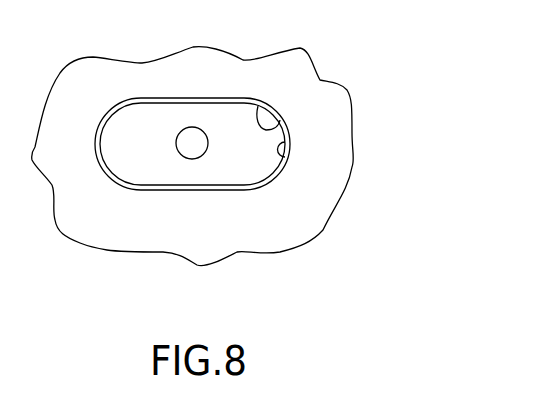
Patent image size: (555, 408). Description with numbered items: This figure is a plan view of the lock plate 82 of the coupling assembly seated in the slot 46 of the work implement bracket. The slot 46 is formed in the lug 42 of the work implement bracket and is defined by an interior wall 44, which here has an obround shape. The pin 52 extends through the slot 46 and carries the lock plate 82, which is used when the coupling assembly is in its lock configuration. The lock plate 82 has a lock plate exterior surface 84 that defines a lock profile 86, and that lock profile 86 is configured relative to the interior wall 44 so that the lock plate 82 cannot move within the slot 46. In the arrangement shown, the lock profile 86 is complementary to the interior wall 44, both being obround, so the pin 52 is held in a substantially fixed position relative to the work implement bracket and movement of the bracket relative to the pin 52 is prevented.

The lug 42 is at (312, 100).
The interior wall 44 is at (288, 158).
The slot 46 is at (282, 177).
The pin 52 is at (192, 137).
The lock plate 82 is at (167, 172).
The lock plate exterior surface 84 is at (258, 106).
The lock profile 86 is at (117, 178).